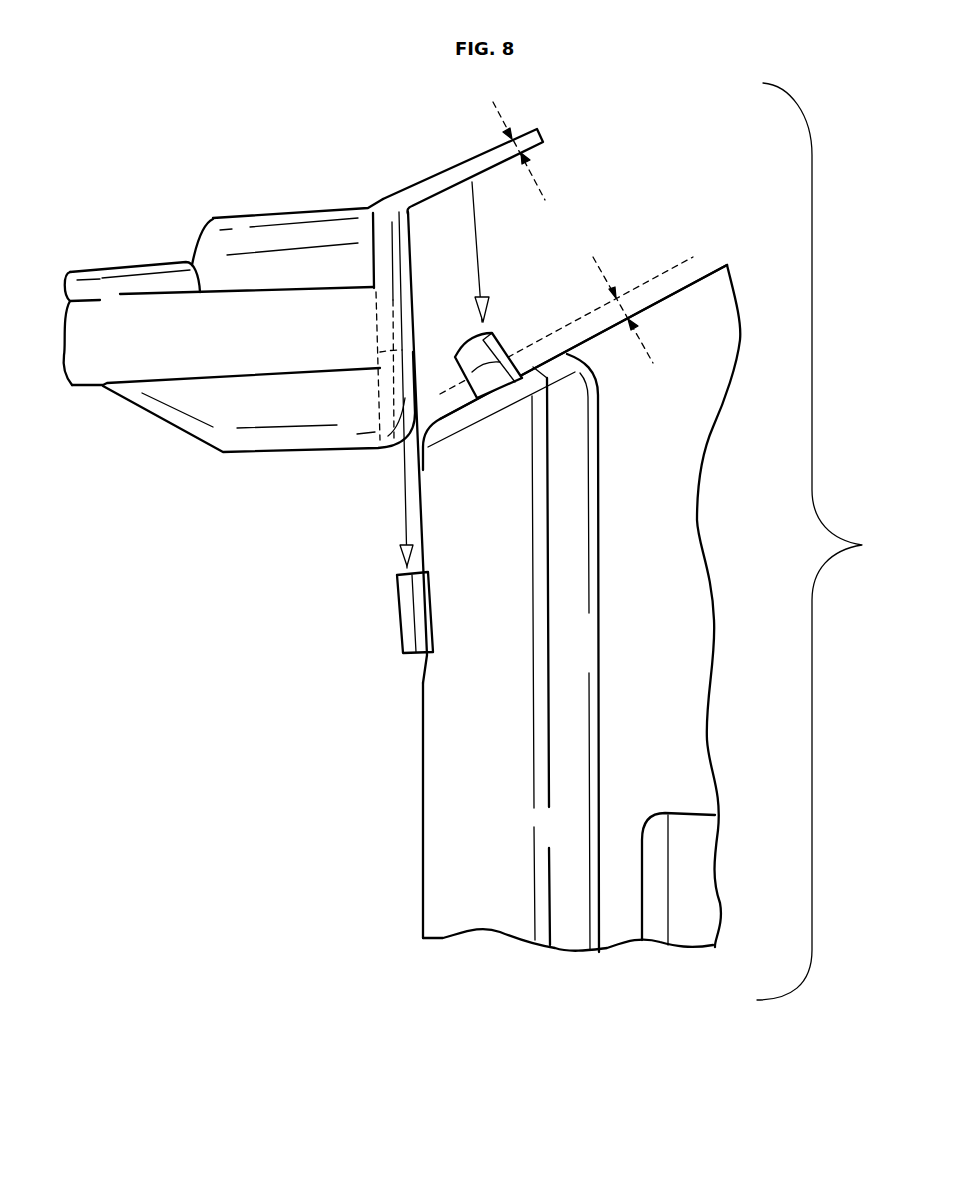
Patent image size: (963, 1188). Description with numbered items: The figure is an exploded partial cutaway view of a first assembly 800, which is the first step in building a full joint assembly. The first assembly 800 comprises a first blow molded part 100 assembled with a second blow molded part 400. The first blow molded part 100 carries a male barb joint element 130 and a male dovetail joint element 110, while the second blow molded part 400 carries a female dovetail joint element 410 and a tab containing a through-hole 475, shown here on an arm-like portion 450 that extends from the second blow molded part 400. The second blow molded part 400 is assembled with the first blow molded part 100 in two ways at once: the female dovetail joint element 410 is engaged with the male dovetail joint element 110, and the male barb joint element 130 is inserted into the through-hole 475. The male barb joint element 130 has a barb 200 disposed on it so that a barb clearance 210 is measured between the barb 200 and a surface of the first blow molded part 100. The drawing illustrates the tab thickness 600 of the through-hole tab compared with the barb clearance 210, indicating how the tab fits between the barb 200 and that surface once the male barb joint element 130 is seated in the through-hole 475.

The first blow molded part 100 is at (507, 619).
The male dovetail joint element 110 is at (400, 630).
The male barb joint element 130 is at (467, 335).
The barb 200 is at (516, 356).
The barb clearance 210 is at (640, 345).
The second blow molded part 400 is at (226, 325).
The female dovetail joint element 410 is at (380, 418).
The bracket 450 is at (420, 394).
The through-hole 475 is at (463, 168).
The tab thickness 600 is at (537, 183).
The first assembly 800 is at (834, 541).